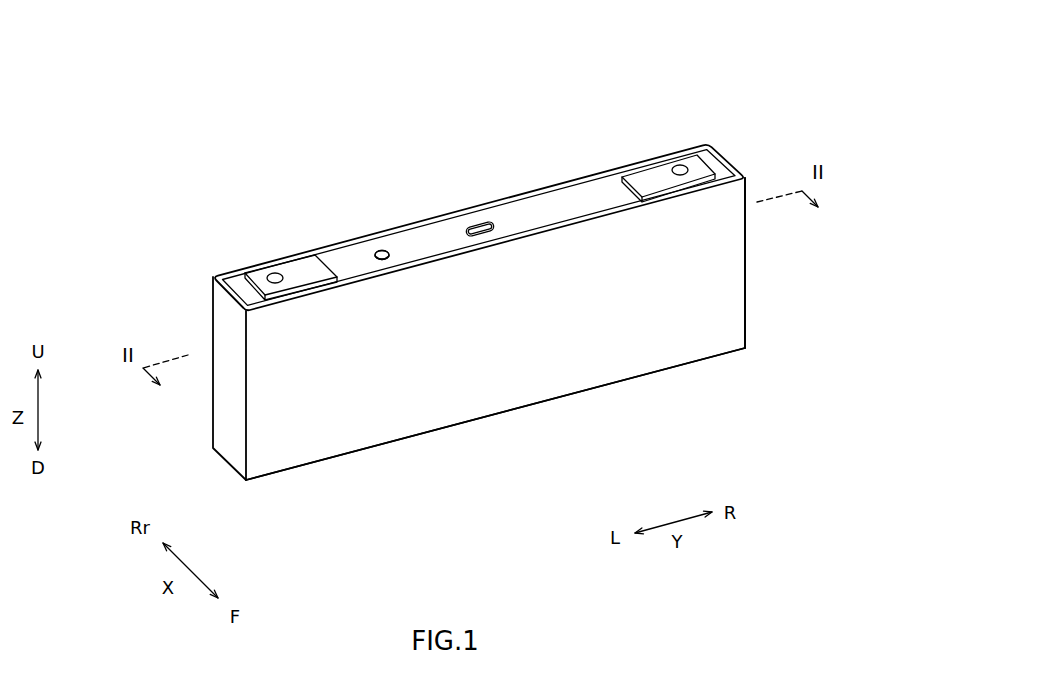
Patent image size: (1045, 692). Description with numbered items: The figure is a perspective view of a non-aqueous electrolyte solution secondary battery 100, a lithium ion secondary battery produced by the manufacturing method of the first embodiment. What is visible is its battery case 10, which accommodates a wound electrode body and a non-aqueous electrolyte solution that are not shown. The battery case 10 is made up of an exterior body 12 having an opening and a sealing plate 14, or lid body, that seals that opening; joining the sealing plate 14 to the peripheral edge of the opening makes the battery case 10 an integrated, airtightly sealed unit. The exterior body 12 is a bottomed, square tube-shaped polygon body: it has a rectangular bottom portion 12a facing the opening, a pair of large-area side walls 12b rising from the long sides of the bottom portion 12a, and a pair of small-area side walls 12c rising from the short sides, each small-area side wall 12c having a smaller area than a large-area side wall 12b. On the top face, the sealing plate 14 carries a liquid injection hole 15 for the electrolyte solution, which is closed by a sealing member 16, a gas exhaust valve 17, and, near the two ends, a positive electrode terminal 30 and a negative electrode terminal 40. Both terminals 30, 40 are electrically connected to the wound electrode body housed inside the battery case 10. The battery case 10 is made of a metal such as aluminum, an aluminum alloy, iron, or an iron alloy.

The non-aqueous electrolyte solution secondary battery 100 is at (658, 62).
The battery case 10 is at (596, 121).
The exterior body 12 is at (592, 253).
The bottom portion 12a is at (453, 427).
The large-area side wall 12b is at (450, 212).
The small-area side wall 12c is at (222, 437).
The sealing plate 14 is at (547, 208).
The liquid injection hole 15 is at (388, 248).
The sealing member 16 is at (378, 250).
The gas exhaust valve 17 is at (481, 222).
The positive electrode terminal 30 is at (273, 273).
The negative electrode terminal 40 is at (673, 163).